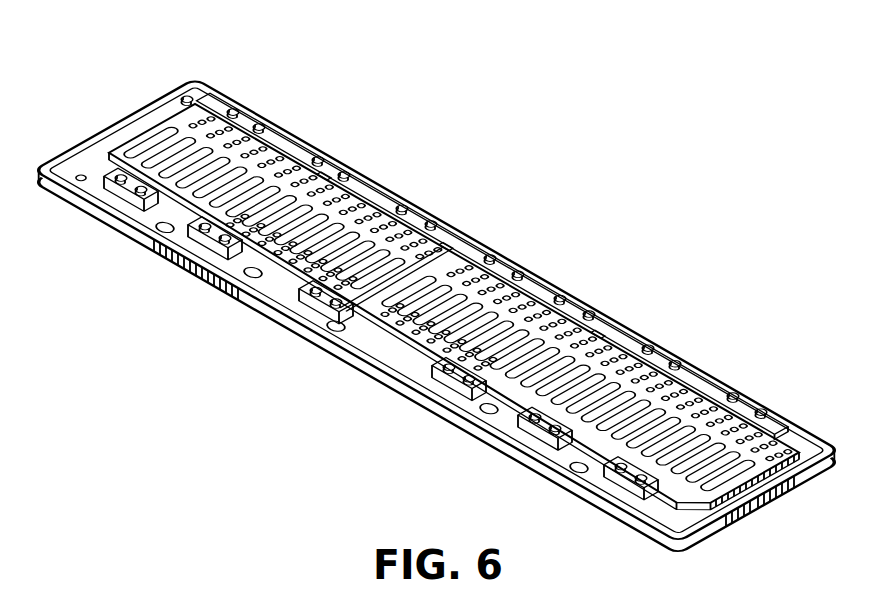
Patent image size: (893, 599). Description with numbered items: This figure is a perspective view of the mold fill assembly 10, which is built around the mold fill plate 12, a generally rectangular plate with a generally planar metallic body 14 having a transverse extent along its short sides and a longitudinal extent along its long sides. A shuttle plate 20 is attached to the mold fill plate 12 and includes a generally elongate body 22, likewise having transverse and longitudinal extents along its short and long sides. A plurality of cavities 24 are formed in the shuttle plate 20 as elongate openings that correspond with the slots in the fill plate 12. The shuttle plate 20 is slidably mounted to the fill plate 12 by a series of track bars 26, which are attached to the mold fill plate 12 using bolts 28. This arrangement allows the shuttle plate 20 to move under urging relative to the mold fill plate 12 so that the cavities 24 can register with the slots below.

The test fixture assembly 10 is at (478, 208).
The mold fill plate 12 is at (762, 378).
The body 14 is at (797, 447).
The shuttle plate 20 is at (360, 345).
The body 22 is at (405, 332).
The cavities 24 is at (150, 143).
The track bars 26 is at (302, 158).
The bolts 28 is at (200, 226).